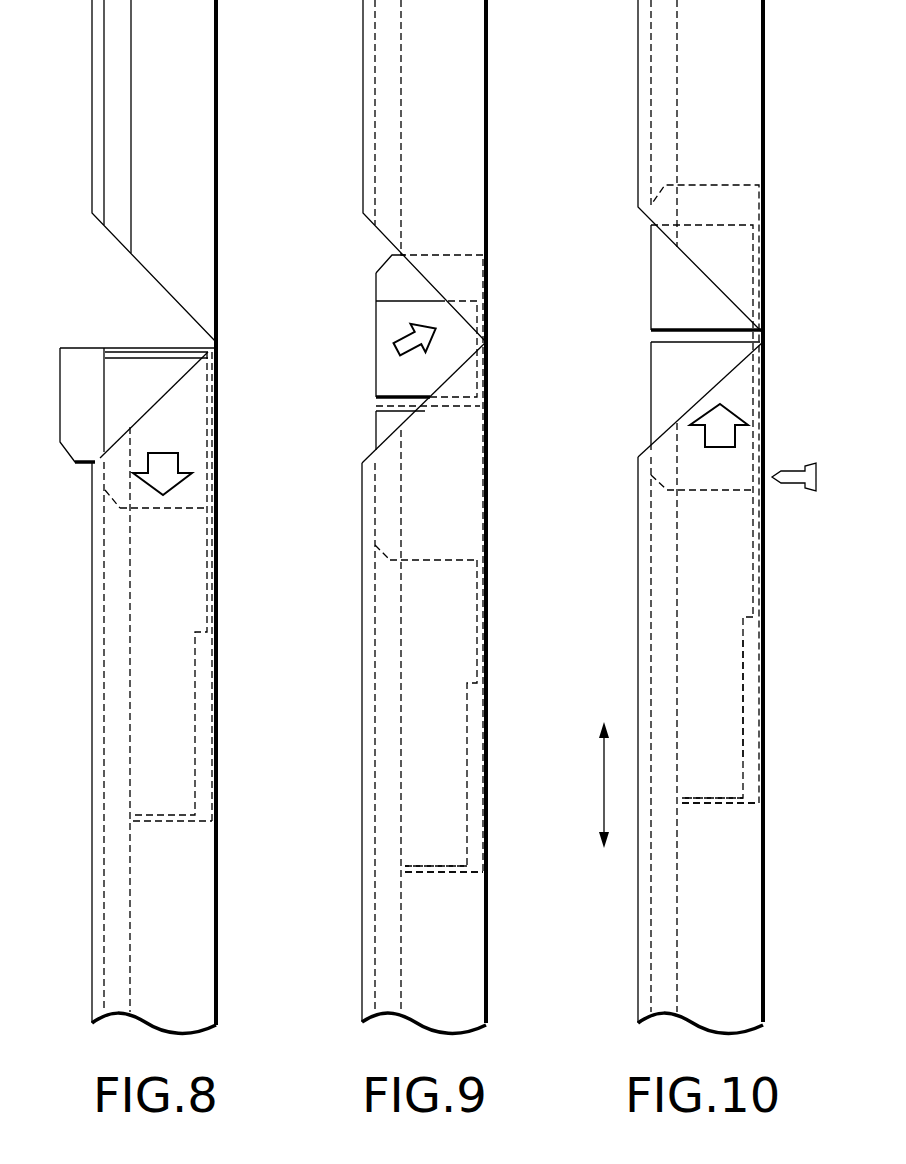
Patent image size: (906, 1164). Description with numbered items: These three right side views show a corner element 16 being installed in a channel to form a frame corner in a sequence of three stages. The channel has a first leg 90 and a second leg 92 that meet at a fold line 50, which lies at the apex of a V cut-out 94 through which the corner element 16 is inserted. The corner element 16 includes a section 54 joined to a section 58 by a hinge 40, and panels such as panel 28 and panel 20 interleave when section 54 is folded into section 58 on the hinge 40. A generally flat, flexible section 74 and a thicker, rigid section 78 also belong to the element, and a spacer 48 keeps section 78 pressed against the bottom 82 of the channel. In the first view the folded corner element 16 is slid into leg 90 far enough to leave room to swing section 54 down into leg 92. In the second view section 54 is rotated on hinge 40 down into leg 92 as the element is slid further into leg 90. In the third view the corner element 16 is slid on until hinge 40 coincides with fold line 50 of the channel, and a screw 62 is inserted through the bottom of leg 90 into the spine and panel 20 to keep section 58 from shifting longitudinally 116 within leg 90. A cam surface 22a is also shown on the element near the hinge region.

In FIG. 8, the corner element 16 is at (118, 362).
In FIG. 9, the corner element 16 is at (380, 418).
In FIG. 10, the corner element 16 is at (655, 290).
In FIG. 9, the panel 20 is at (470, 535).
In FIG. 9, the cam surface 22a is at (452, 355).
In FIG. 9, the panel 28 is at (483, 270).
In FIG. 9, the hinge 40 is at (478, 402).
In FIG. 10, the hinge 40 is at (763, 333).
In FIG. 8, the spacer 48 is at (167, 822).
In FIG. 9, the spacer 48 is at (445, 873).
In FIG. 10, the spacer 48 is at (730, 805).
In FIG. 8, the fold line 50 is at (216, 342).
In FIG. 9, the fold line 50 is at (486, 342).
In FIG. 10, the fold line 50 is at (763, 342).
In FIG. 9, the section 54 is at (383, 320).
In FIG. 10, the section 54 is at (745, 253).
In FIG. 9, the section 58 is at (410, 525).
In FIG. 10, the section 58 is at (752, 385).
In FIG. 10, the screw 62 is at (790, 485).
In FIG. 10, the section 74 is at (758, 585).
In FIG. 10, the section 78 is at (752, 675).
In FIG. 8, the bottom 82 is at (216, 922).
In FIG. 10, the bottom 82 is at (763, 960).
In FIG. 8, the leg 90 is at (211, 983).
In FIG. 9, the leg 90 is at (480, 1000).
In FIG. 10, the leg 90 is at (755, 900).
In FIG. 8, the leg 92 is at (210, 38).
In FIG. 9, the leg 92 is at (482, 38).
In FIG. 10, the leg 92 is at (757, 66).
In FIG. 8, the V cut-out 94 is at (110, 282).
In FIG. 9, the longitudinal shifting 116 is at (600, 750).